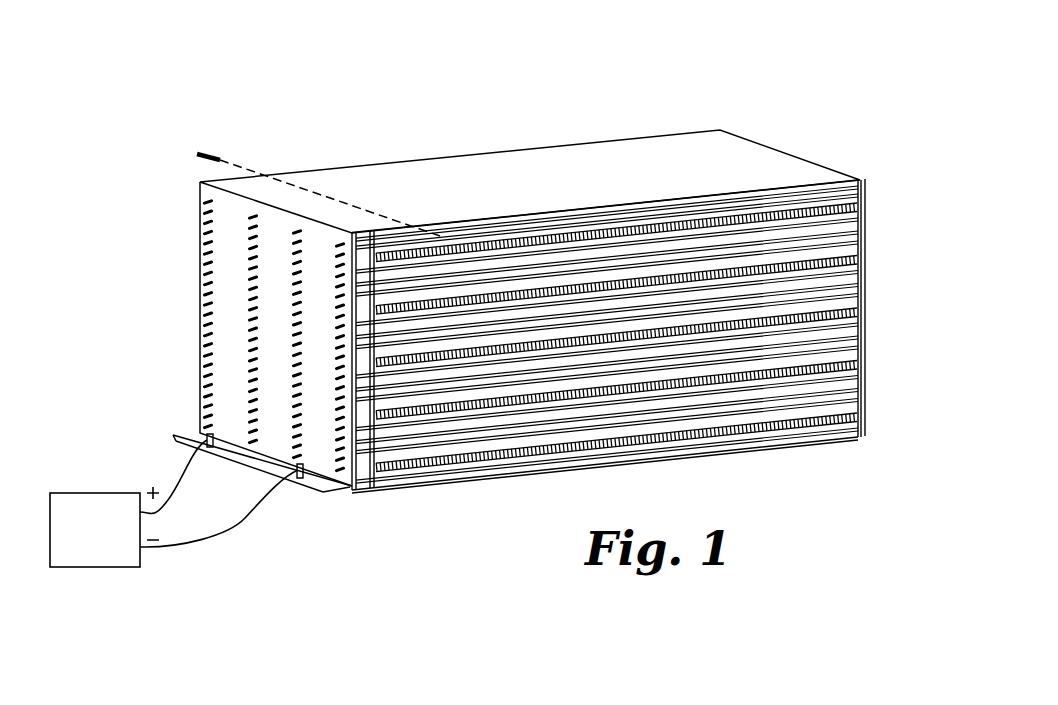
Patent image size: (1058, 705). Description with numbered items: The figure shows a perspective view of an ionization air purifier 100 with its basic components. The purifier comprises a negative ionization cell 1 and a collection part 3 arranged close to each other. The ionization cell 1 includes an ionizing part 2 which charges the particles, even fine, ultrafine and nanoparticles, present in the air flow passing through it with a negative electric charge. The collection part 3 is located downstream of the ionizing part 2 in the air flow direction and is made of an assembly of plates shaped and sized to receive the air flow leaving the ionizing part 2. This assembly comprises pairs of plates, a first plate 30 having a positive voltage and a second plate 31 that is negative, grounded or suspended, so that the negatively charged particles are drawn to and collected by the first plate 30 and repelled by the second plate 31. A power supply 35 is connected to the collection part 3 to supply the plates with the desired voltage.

The ionization air purifier 100 is at (675, 60).
The negative ionization cell 1 is at (357, 470).
The ionizing part 2 is at (214, 152).
The collection part 3 is at (587, 160).
The first plate 30 is at (750, 162).
The second plate 31 is at (842, 200).
The power supply 35 is at (72, 546).